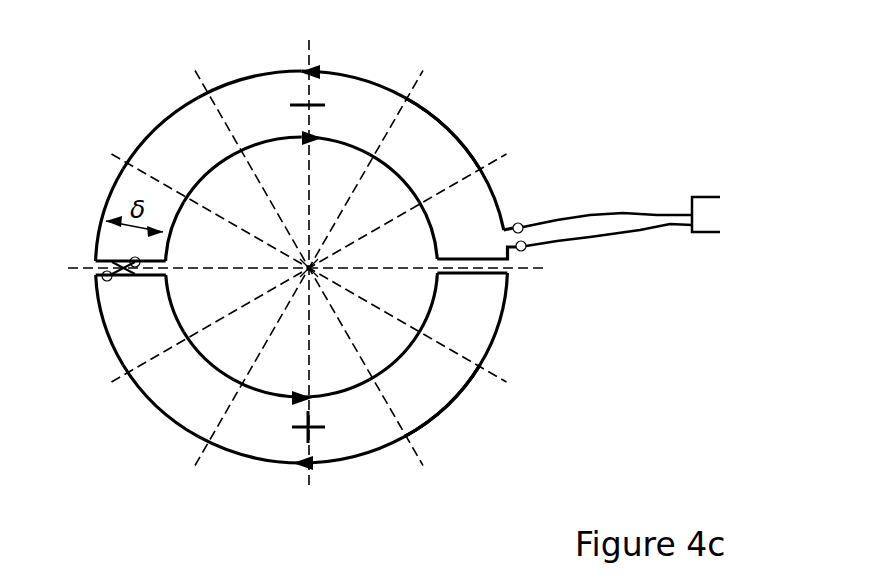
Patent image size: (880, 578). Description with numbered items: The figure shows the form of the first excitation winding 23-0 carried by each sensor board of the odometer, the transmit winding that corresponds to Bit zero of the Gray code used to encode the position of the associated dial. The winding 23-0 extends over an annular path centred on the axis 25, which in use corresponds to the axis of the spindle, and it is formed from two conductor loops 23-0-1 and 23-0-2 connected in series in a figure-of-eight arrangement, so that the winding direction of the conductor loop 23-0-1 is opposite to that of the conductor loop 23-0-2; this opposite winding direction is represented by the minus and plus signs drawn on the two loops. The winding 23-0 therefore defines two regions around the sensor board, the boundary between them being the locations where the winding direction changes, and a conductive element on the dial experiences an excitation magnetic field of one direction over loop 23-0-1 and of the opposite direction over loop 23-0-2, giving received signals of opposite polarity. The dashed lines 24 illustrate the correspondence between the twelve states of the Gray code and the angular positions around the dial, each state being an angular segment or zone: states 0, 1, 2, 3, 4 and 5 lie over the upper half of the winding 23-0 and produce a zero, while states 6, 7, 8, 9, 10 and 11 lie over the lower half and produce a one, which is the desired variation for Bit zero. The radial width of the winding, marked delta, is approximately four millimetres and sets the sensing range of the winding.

The state 0 is at (125, 225).
The state 1 is at (178, 148).
The state 2 is at (250, 99).
The state 3 is at (353, 101).
The state 4 is at (430, 149).
The state 5 is at (481, 214).
The state 6 is at (479, 319).
The state 7 is at (425, 387).
The state 8 is at (353, 439).
The state 9 is at (250, 439).
The state 10 is at (173, 387).
The state 11 is at (123, 320).
The excitation winding 23-0 is at (637, 213).
The conductor loop 23-0-1 is at (423, 127).
The conductor loop 23-0-2 is at (447, 390).
The dashed lines 24 is at (448, 348).
The axis 25 is at (310, 268).